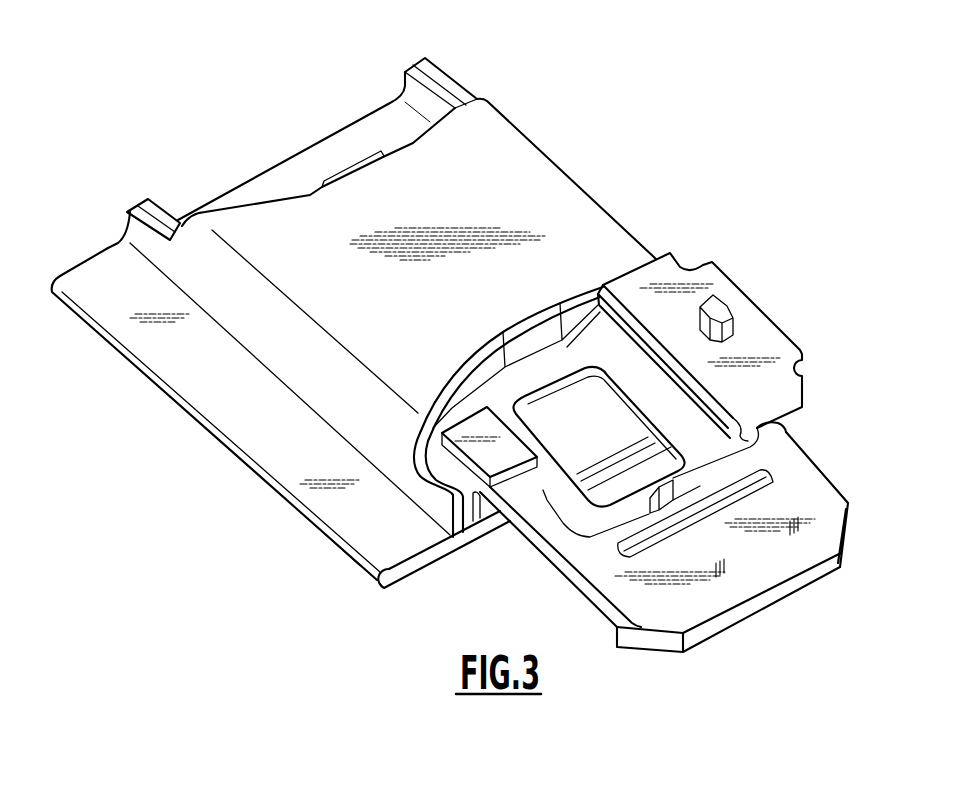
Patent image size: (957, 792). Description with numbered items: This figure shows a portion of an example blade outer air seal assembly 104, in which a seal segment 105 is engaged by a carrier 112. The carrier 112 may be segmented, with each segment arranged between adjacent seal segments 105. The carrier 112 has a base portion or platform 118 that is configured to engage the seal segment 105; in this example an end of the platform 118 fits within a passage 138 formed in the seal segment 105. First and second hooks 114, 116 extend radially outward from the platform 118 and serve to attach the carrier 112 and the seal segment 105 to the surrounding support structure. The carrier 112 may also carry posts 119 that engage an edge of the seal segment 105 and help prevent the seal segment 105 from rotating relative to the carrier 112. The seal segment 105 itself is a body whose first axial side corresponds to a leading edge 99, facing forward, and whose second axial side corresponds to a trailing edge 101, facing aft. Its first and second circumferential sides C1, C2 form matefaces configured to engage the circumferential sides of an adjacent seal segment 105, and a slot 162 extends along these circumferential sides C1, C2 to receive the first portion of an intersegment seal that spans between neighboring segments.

The BOAS assembly 104 is at (462, 356).
The seal segment 105 is at (353, 350).
The trailing edge 101 is at (618, 425).
The carrier 112 is at (790, 345).
The first hook 114 is at (758, 428).
The second hook 116 is at (501, 482).
The platform 118 is at (728, 598).
The post 119 is at (673, 483).
The passage 138 is at (478, 522).
The slot 162 is at (482, 370).
The leading edge 99 is at (331, 541).
The first circumferential side C1 is at (396, 588).
The second circumferential side C2 is at (106, 252).